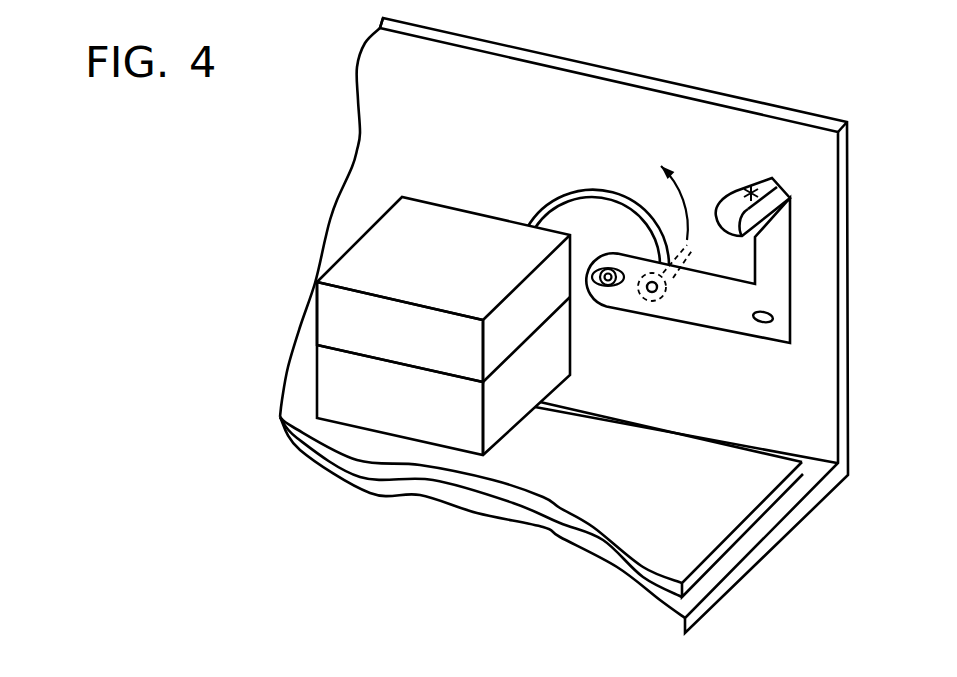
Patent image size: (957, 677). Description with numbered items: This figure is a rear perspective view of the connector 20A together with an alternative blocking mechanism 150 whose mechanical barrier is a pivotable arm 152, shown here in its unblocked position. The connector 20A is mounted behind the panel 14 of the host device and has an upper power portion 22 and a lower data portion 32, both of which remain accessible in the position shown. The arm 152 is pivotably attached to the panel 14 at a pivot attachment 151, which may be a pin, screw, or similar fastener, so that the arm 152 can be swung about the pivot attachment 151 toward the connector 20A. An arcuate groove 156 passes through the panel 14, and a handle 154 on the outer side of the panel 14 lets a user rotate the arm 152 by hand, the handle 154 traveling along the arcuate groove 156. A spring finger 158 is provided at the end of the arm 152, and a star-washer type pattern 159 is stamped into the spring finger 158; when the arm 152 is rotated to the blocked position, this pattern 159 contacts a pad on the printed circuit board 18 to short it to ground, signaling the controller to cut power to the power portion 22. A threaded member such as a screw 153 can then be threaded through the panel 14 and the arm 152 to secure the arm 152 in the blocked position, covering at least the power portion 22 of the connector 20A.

The panel 14 is at (850, 177).
The printed circuit board 18 is at (688, 550).
The connector 20A is at (350, 275).
The power portion 22 is at (317, 282).
The data portion 32 is at (317, 418).
The blocking mechanism 150 is at (717, 167).
The pivot attachment 151 is at (608, 267).
The arm 152 is at (712, 303).
The screw 153 is at (757, 328).
The handle 154 is at (652, 302).
The arcuate groove 156 is at (612, 152).
The spring finger 158 is at (757, 222).
The star-washer type pattern 159 is at (752, 190).